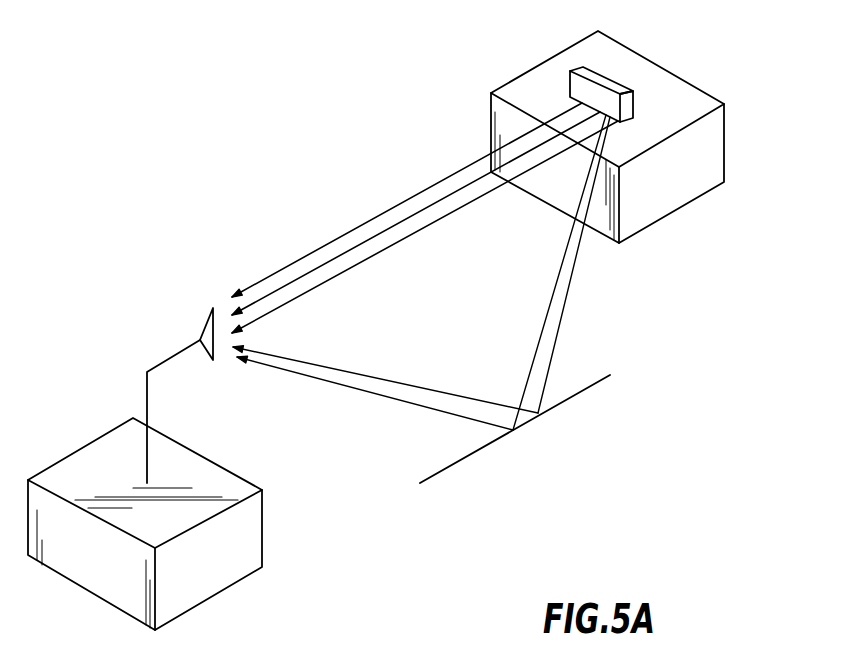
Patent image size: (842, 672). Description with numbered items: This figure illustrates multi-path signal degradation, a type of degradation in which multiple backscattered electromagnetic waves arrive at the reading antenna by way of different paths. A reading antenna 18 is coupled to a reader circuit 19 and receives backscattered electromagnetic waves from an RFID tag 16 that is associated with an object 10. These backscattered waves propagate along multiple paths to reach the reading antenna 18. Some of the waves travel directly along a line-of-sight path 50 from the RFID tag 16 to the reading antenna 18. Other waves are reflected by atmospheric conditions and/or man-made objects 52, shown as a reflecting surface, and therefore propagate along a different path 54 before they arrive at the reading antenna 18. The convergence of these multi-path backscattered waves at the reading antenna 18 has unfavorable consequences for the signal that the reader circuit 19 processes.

The object 10 is at (692, 98).
The RFID tag 16 is at (580, 68).
The reading antenna 18 is at (167, 358).
The reader circuit 19 is at (228, 485).
The line-of-sight path 50 is at (377, 250).
The atmospheric conditions and/or man-made objects 52 is at (568, 402).
The different path 54 is at (563, 311).